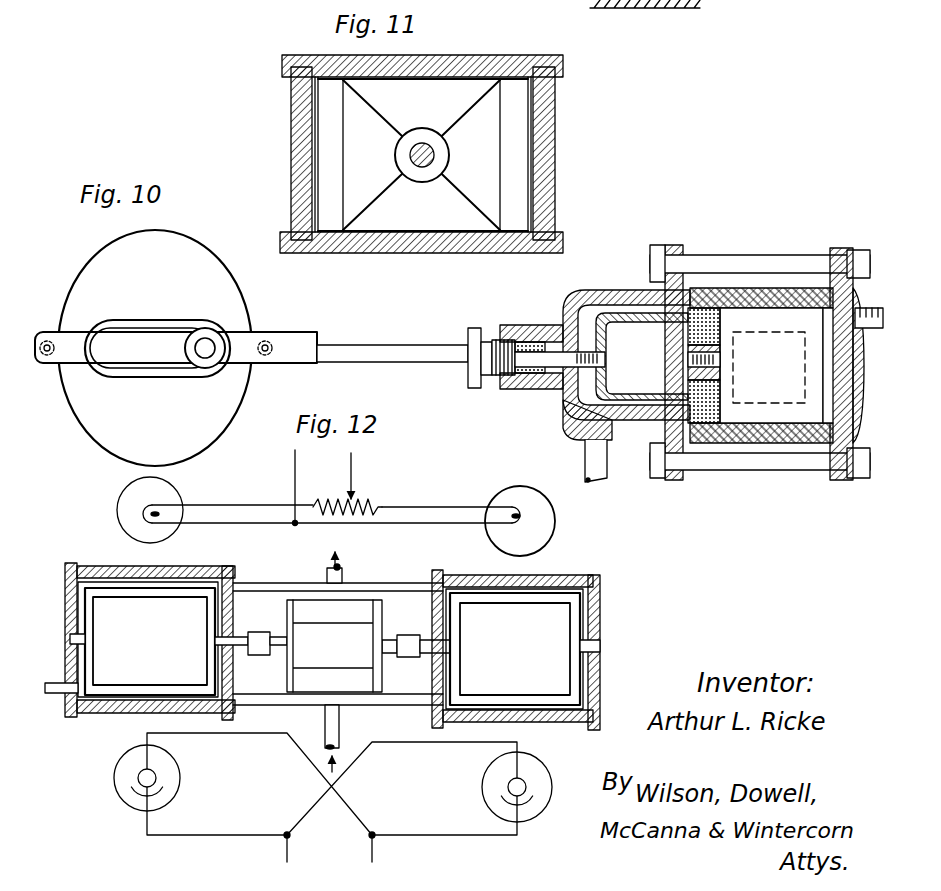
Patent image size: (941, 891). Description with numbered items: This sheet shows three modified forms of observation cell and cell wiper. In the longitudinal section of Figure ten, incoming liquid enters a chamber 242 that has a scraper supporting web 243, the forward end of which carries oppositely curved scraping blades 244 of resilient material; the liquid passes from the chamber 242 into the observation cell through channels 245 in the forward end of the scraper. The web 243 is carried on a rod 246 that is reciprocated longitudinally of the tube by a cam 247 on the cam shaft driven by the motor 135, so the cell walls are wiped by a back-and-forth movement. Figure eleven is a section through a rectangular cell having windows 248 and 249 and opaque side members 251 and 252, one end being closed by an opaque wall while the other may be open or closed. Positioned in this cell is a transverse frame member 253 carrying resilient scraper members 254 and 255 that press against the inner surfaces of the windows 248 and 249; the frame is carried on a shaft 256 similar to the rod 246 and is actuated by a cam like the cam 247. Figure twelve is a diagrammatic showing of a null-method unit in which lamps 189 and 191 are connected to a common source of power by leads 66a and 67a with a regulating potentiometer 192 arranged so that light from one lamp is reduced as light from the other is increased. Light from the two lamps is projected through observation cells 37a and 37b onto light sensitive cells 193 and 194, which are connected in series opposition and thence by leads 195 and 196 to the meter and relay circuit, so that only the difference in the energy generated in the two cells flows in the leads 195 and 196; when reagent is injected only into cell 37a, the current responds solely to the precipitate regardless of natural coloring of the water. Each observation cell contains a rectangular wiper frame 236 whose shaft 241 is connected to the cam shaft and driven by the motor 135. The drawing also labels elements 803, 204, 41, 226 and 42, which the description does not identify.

In FIG. 11, the opaque side member 251 is at (414, 64).
In FIG. 11, the opaque side member 252 is at (378, 248).
In FIG. 11, the window 249 is at (291, 111).
In FIG. 11, the window 248 is at (558, 103).
In FIG. 11, the resilient scraper member 255 is at (303, 152).
In FIG. 11, the resilient scraper member 254 is at (545, 135).
In FIG. 11, the transverse frame member 253 is at (423, 155).
In FIG. 11, the shaft 256 is at (418, 143).
In FIG. 10, the cam 247 is at (173, 252).
In FIG. 10, the rod 246 is at (365, 353).
In FIG. 10, the chamber 242 is at (569, 318).
In FIG. 10, the scraper supporting web 243 is at (630, 317).
In FIG. 10, the scraping blades 244 is at (712, 300).
In FIG. 10, the tie rod 803 is at (742, 290).
In FIG. 10, the cylinder 204 is at (770, 333).
In FIG. 10, the channels 245 is at (718, 336).
In FIG. 10, the pipe 41 is at (600, 466).
In FIG. 12, the pipe 41 is at (339, 723).
In FIG. 12, the lamp 189 is at (168, 494).
In FIG. 12, the lamp 191 is at (542, 528).
In FIG. 12, the regulating potentiometer 192 is at (372, 507).
In FIG. 12, the lead 67a is at (357, 466).
In FIG. 12, the lead 66a is at (295, 476).
In FIG. 12, the observation cell 37a is at (65, 600).
In FIG. 12, the observation cell 37b is at (600, 612).
In FIG. 12, the rectangular frame 236 is at (90, 659).
In FIG. 12, the inlet pipe 226 is at (55, 695).
In FIG. 12, the shaft 241 is at (240, 637).
In FIG. 12, the motor 135 is at (360, 612).
In FIG. 12, the outlet pipe 42 is at (341, 577).
In FIG. 12, the light sensitive cell 194 is at (114, 780).
In FIG. 12, the light sensitive cell 193 is at (482, 790).
In FIG. 12, the lead 195 is at (283, 851).
In FIG. 12, the lead 196 is at (378, 852).